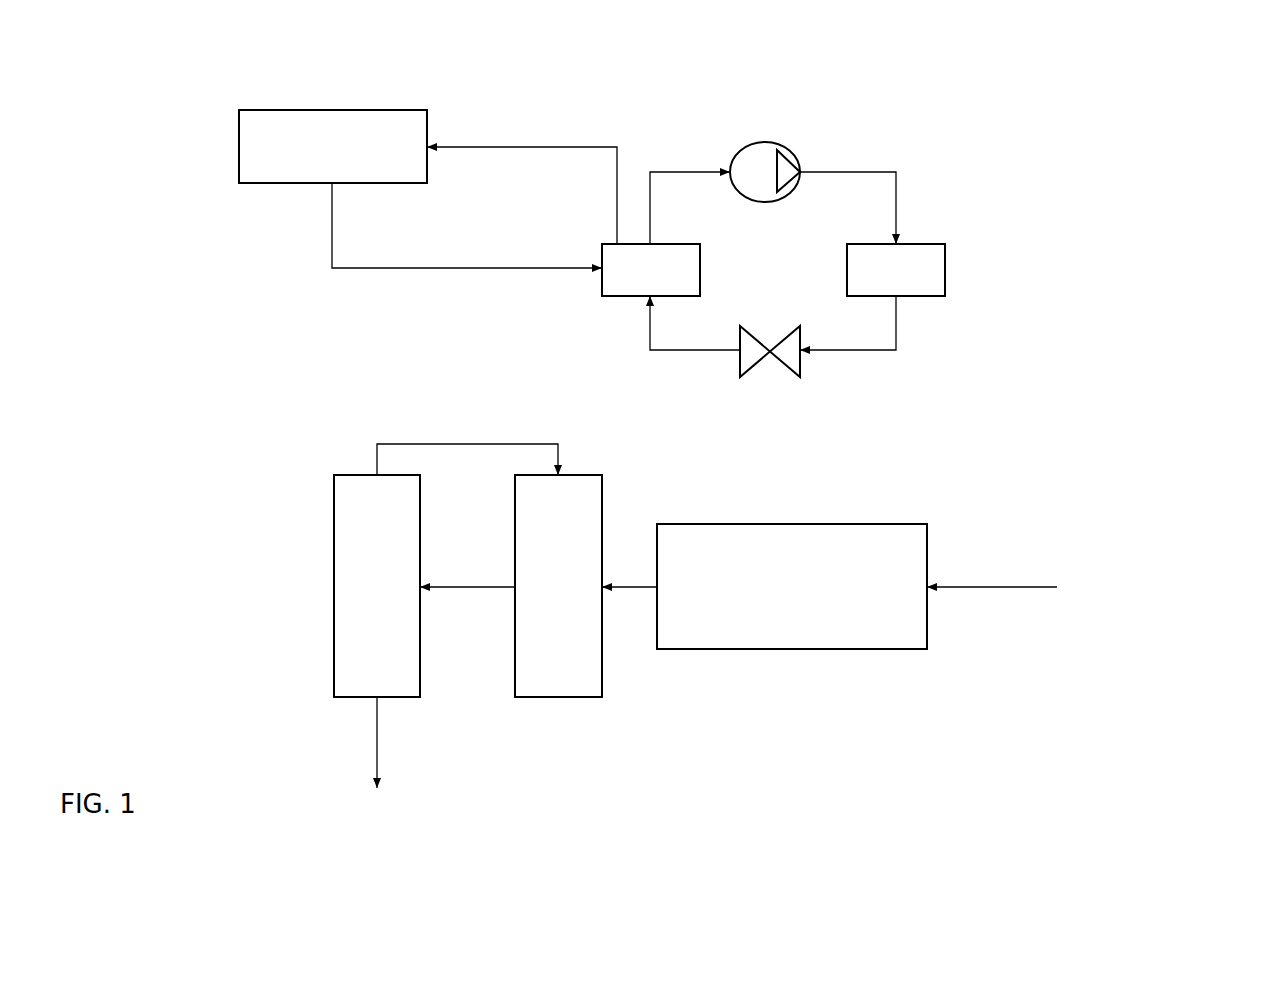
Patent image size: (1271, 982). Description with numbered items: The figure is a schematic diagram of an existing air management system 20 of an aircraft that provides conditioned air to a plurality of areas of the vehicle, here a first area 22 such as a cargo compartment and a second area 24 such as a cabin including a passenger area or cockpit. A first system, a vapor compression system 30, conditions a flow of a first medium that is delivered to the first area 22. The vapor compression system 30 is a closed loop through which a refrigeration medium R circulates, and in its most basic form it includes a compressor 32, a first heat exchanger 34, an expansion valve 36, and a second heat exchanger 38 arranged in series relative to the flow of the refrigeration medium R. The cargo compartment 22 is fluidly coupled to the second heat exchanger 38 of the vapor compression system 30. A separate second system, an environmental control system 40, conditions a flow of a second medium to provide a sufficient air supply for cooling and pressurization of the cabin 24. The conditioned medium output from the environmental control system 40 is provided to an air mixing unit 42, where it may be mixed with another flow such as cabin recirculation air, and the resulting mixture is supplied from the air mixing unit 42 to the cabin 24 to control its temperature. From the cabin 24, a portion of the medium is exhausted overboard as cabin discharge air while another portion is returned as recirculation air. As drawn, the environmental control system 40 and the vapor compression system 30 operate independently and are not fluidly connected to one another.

The air management system 20 is at (1107, 150).
The first area 22 is at (333, 146).
The second area 24 is at (377, 586).
The vapor compression system 30 is at (907, 145).
The compressor 32 is at (763, 147).
The first heat exchanger 34 is at (896, 270).
The expansion valve 36 is at (789, 352).
The second heat exchanger 38 is at (651, 270).
The environmental control system 40 is at (792, 586).
The air mixing unit 42 is at (558, 586).